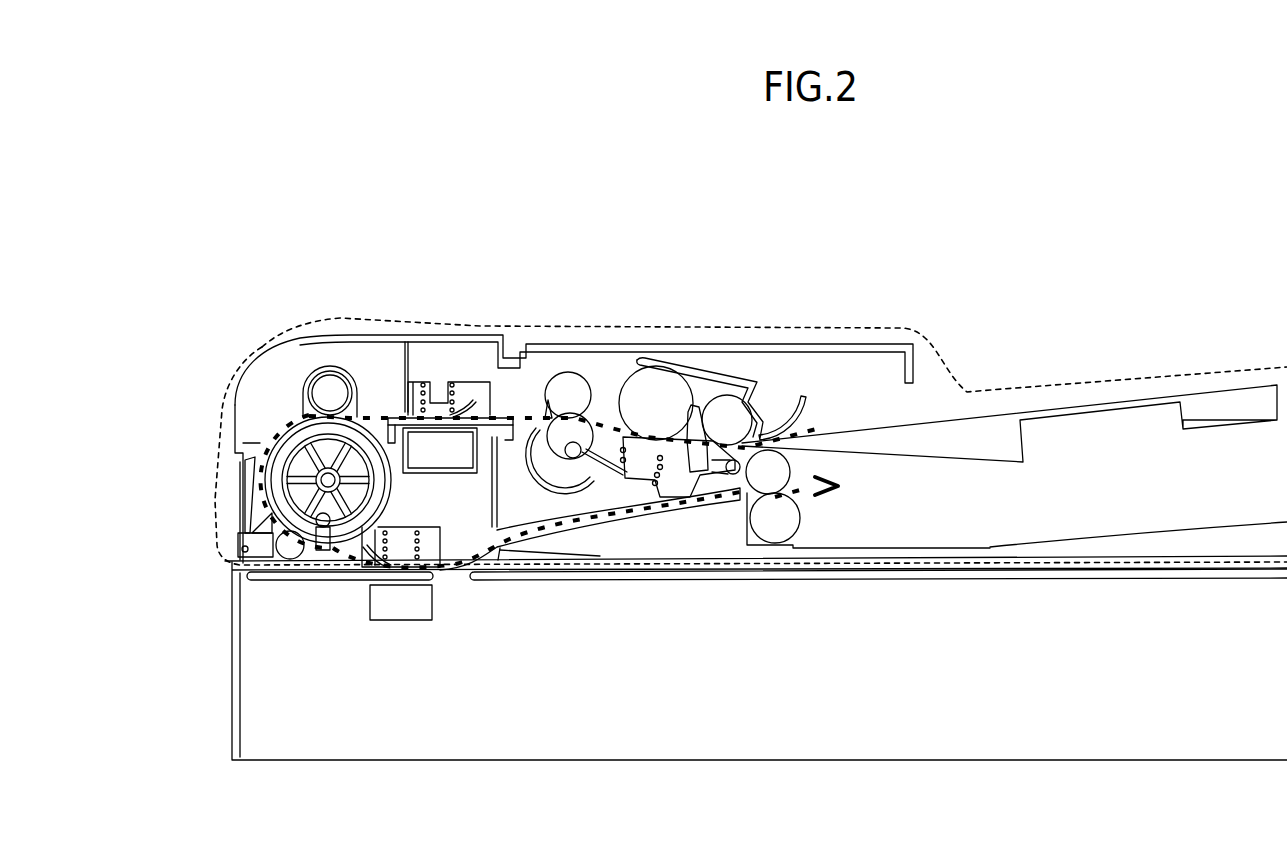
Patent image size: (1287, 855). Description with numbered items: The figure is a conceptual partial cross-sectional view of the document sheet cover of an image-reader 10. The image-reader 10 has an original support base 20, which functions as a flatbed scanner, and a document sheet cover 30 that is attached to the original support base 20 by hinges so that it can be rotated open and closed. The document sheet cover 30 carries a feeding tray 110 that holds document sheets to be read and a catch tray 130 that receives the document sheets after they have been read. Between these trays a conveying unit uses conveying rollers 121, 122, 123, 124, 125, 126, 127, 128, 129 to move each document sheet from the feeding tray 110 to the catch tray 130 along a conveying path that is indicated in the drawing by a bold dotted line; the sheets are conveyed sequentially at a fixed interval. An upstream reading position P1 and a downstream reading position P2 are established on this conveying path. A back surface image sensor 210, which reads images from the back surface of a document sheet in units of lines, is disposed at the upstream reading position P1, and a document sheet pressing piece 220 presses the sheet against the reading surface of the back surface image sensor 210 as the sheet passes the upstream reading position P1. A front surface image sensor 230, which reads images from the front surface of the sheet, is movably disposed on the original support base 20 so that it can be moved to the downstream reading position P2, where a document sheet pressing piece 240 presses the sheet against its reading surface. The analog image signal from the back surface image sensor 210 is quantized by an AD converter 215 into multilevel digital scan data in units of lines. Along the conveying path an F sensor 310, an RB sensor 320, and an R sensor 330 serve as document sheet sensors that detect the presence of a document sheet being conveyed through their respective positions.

The image-reader 10 is at (296, 258).
The original support base 20 is at (445, 738).
The document sheet cover 30 is at (808, 328).
The feeding tray 110 is at (934, 421).
The conveying roller 121 is at (728, 412).
The conveying roller 122 is at (653, 388).
The conveying roller 123 is at (577, 427).
The conveying roller 124 is at (566, 392).
The conveying roller 125 is at (317, 393).
The conveying roller 126 is at (270, 440).
The conveying roller 127 is at (290, 555).
The conveying roller 128 is at (777, 467).
The conveying roller 129 is at (790, 523).
The catch tray 130 is at (1113, 537).
The back surface image sensor 210 is at (392, 417).
The AD converter 215 is at (492, 440).
The document sheet pressing piece 220 is at (445, 392).
The front surface image sensor 230 is at (400, 603).
The document sheet pressing piece 240 is at (431, 557).
The F sensor 310 is at (698, 403).
The RB sensor 320 is at (547, 400).
The R sensor 330 is at (322, 555).
The upstream reading position P1 is at (492, 473).
The downstream reading position P2 is at (369, 597).